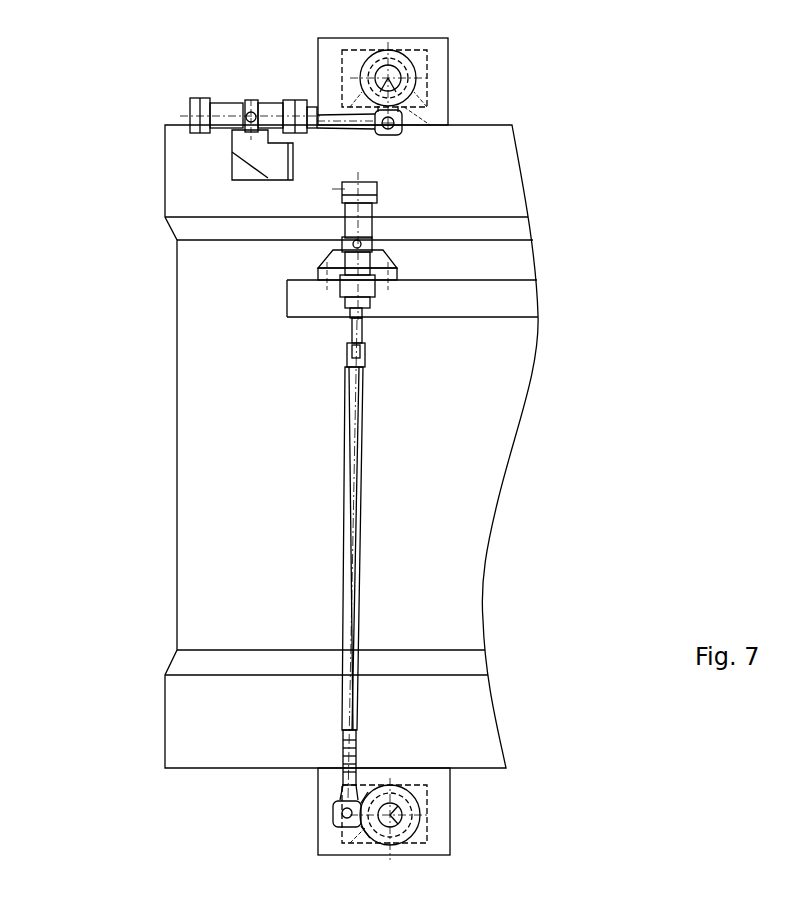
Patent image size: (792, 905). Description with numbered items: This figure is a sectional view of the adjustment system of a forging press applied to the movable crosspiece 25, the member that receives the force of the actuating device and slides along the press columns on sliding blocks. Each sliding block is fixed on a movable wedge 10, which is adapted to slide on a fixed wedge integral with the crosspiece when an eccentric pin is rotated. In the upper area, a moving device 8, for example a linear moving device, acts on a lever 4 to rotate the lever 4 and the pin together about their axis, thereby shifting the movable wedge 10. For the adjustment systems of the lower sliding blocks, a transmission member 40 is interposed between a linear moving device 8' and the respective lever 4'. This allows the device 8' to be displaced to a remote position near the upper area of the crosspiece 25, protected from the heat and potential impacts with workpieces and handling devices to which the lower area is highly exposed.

The movable crosspiece 25 is at (280, 402).
The movable wedge 10 is at (433, 63).
The lever 4 is at (463, 99).
The lever 4' is at (446, 813).
The moving device 8 is at (277, 82).
The linear moving device 8' is at (454, 240).
The transmission member 40 is at (360, 510).